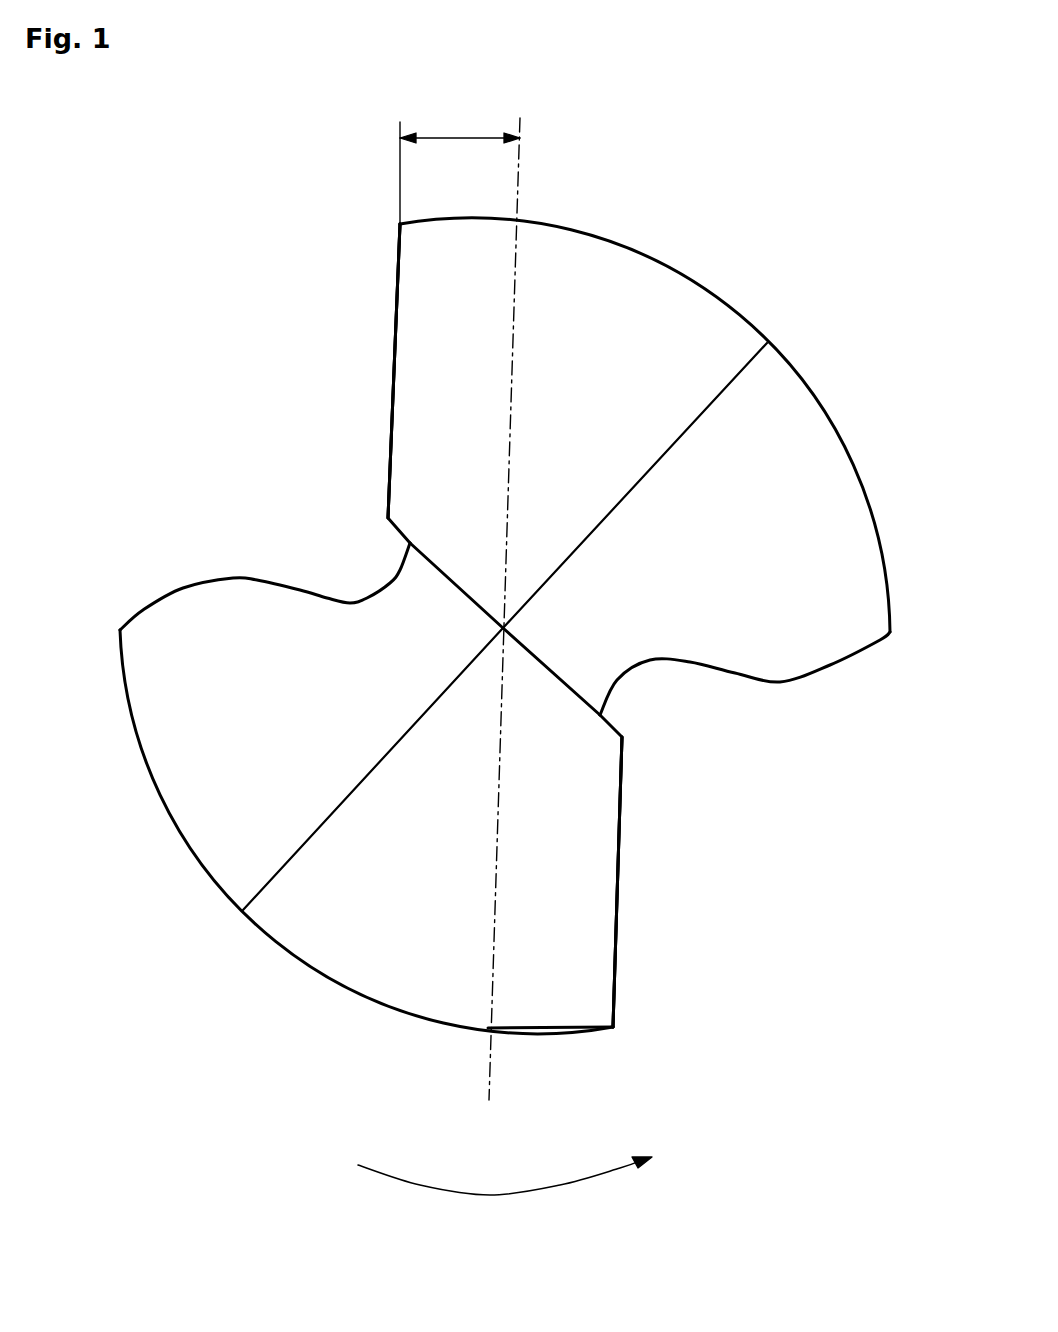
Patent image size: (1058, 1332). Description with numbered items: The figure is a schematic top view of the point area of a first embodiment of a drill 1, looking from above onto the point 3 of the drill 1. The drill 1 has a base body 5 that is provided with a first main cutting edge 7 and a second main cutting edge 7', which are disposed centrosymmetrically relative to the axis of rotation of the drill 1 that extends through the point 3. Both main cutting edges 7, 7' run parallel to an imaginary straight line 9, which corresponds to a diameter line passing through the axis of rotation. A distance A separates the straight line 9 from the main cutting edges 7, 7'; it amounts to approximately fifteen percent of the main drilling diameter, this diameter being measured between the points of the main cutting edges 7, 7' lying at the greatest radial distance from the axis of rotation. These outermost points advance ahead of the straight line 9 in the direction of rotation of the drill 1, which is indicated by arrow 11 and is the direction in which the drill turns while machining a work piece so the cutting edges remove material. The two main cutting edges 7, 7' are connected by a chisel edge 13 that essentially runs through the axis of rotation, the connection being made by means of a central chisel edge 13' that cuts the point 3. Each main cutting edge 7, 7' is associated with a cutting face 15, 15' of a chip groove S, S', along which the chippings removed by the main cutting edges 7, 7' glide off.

The drill 1 is at (505, 680).
The point 3 is at (503, 628).
The base body 5 is at (275, 995).
The first main cutting edge 7 is at (656, 871).
The second main cutting edge 7' is at (345, 383).
The imaginary straight line 9 is at (490, 1080).
The arrow 11 is at (497, 1195).
The chisel edge 13 is at (615, 749).
The central chisel edge 13' is at (356, 571).
The cutting face 15 is at (679, 882).
The cutting face 15' is at (335, 371).
The distance A is at (459, 138).
The chip groove S is at (639, 882).
The chip groove S' is at (356, 371).